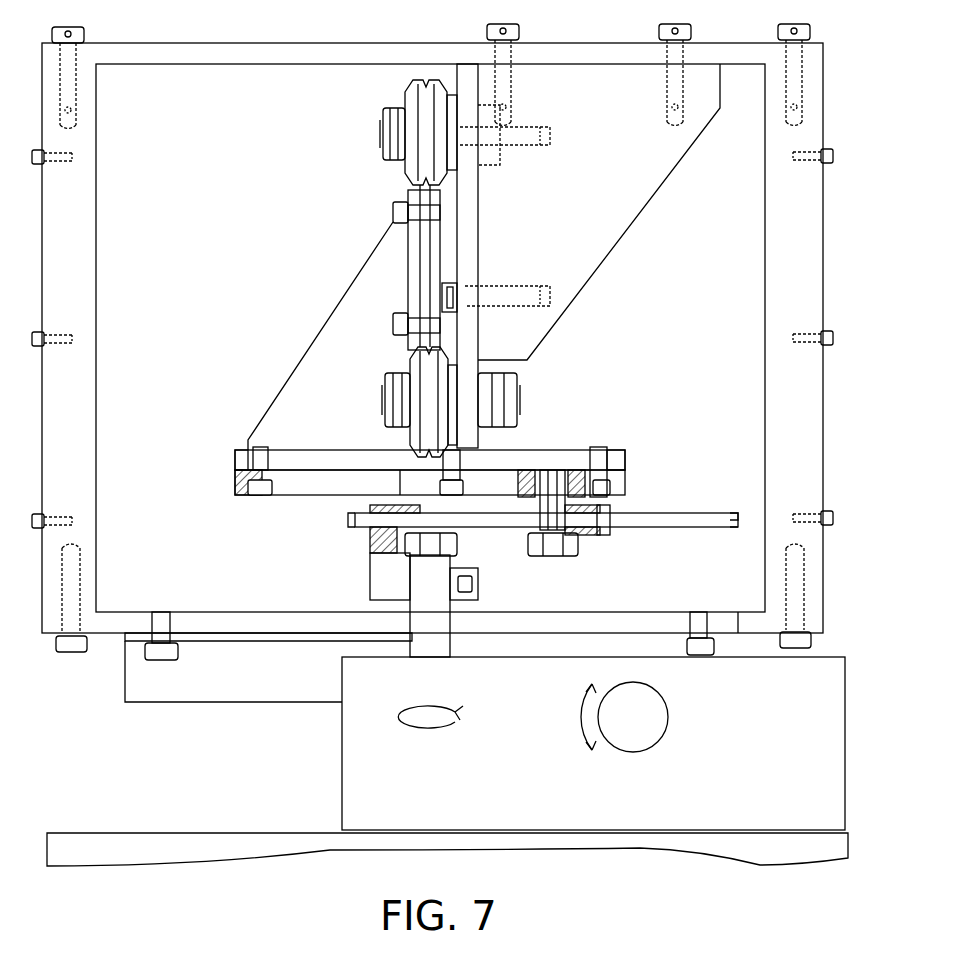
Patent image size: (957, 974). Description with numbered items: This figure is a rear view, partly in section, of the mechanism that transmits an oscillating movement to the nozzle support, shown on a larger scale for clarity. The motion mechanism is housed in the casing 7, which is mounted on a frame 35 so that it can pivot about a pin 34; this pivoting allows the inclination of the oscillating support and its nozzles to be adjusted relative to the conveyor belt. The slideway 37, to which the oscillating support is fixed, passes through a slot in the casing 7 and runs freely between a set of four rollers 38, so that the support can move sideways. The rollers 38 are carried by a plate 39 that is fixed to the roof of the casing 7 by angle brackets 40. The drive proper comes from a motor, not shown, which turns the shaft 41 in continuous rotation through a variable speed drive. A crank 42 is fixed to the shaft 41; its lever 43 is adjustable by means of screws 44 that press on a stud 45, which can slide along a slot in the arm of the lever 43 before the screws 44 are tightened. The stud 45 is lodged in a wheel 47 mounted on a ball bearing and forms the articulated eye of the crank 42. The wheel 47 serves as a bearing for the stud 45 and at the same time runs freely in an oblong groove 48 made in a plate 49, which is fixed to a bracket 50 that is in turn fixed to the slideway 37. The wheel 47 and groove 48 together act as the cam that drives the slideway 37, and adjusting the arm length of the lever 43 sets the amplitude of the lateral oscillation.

The casing 7 is at (62, 243).
The pin 34 is at (668, 717).
The frame 35 is at (360, 768).
The slideway 37 is at (430, 246).
The rollers 38 is at (428, 80).
The plate 39 is at (478, 200).
The angle brackets 40 is at (620, 205).
The shaft 41 is at (430, 640).
The crank 42 is at (370, 590).
The lever 43 is at (500, 533).
The screws 44 is at (670, 522).
The stud 45 is at (547, 495).
The wheel 47 is at (577, 470).
The oblong groove 48 is at (320, 490).
The plate 49 is at (235, 487).
The bracket 50 is at (347, 318).